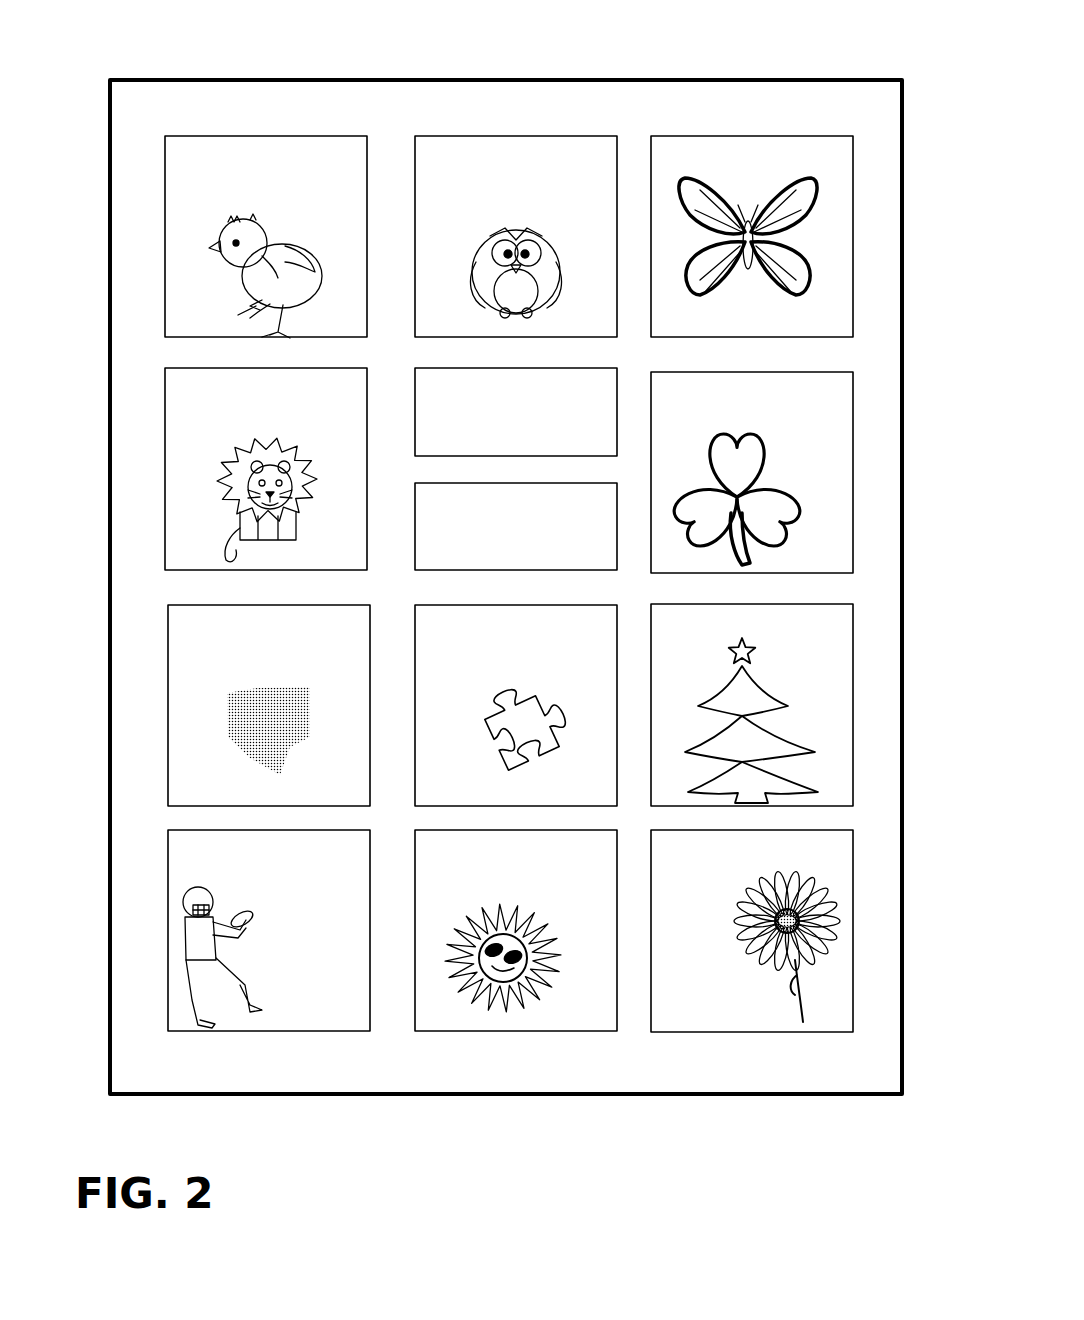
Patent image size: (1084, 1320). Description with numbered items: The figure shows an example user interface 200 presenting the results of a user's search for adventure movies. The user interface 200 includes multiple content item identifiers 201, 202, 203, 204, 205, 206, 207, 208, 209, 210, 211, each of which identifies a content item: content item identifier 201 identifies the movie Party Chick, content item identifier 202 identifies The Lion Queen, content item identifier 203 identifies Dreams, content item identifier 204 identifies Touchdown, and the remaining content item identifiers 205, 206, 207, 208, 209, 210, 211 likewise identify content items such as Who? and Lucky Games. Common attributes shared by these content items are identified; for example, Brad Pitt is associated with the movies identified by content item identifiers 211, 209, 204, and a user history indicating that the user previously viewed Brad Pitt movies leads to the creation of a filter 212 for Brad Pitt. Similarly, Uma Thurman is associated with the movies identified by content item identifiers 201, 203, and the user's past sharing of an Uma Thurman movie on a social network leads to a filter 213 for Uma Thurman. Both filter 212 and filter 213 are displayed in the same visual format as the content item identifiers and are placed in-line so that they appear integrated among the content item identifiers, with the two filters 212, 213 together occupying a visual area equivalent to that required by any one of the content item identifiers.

The user interface 200 is at (108, 150).
The content item identifier 201 is at (217, 298).
The content item identifier 202 is at (193, 497).
The content item identifier 203 is at (193, 705).
The content item identifier 204 is at (179, 857).
The content item identifier 205 is at (443, 788).
The content item identifier 206 is at (597, 1009).
The content item identifier 207 is at (833, 858).
The content item identifier 208 is at (825, 650).
The content item identifier 209 is at (832, 413).
The content item identifier 210 is at (832, 238).
The content item identifier 211 is at (483, 150).
The filter 212 is at (437, 372).
The filter 213 is at (413, 566).